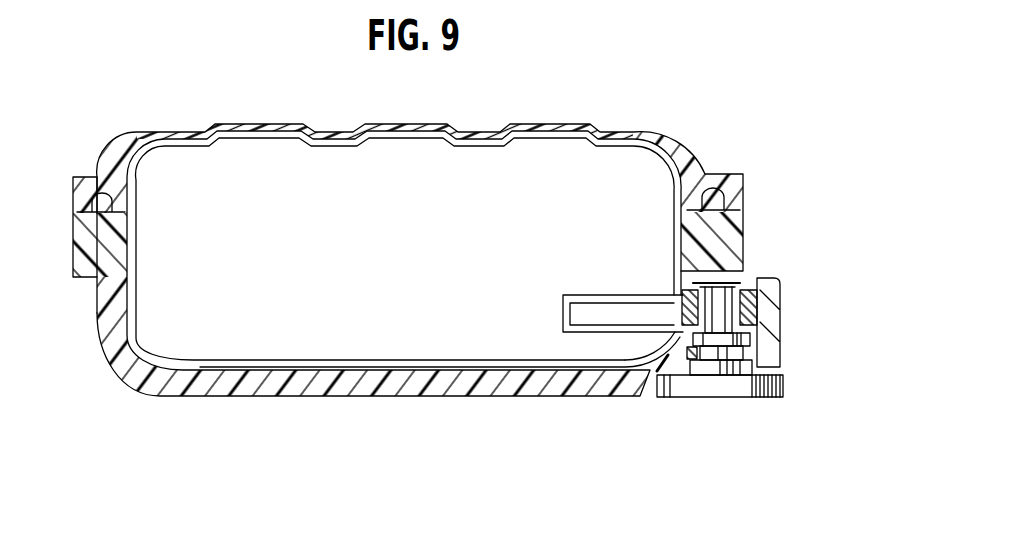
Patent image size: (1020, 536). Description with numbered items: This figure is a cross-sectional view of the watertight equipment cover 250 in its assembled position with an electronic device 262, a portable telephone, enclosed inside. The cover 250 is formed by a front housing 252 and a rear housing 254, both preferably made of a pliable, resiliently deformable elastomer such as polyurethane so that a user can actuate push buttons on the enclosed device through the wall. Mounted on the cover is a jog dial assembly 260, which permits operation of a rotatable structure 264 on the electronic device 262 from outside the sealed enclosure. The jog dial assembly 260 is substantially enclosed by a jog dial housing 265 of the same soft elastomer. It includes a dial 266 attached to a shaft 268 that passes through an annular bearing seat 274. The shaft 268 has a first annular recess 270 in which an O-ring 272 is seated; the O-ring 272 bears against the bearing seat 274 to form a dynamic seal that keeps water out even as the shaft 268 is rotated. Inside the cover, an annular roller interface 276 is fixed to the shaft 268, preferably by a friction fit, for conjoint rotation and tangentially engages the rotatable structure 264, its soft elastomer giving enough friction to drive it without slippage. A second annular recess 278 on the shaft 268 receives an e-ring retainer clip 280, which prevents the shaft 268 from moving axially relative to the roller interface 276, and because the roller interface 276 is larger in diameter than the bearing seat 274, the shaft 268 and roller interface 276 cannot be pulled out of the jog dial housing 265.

The watertight equipment cover 250 is at (408, 245).
The front housing 252 is at (133, 132).
The rear housing 254 is at (122, 385).
The jog dial assembly 260 is at (732, 311).
The electronic device 262 is at (293, 343).
The rotatable structure 264 is at (594, 313).
The jog dial housing 265 is at (783, 367).
The dial 266 is at (784, 392).
The shaft 268 is at (784, 281).
The first annular recess 270 is at (777, 336).
The O-ring 272 is at (752, 350).
The annular bearing seat 274 is at (755, 378).
The annular roller interface 276 is at (770, 282).
The second annular recess 278 is at (762, 280).
The e-ring retainer clip 280 is at (741, 278).